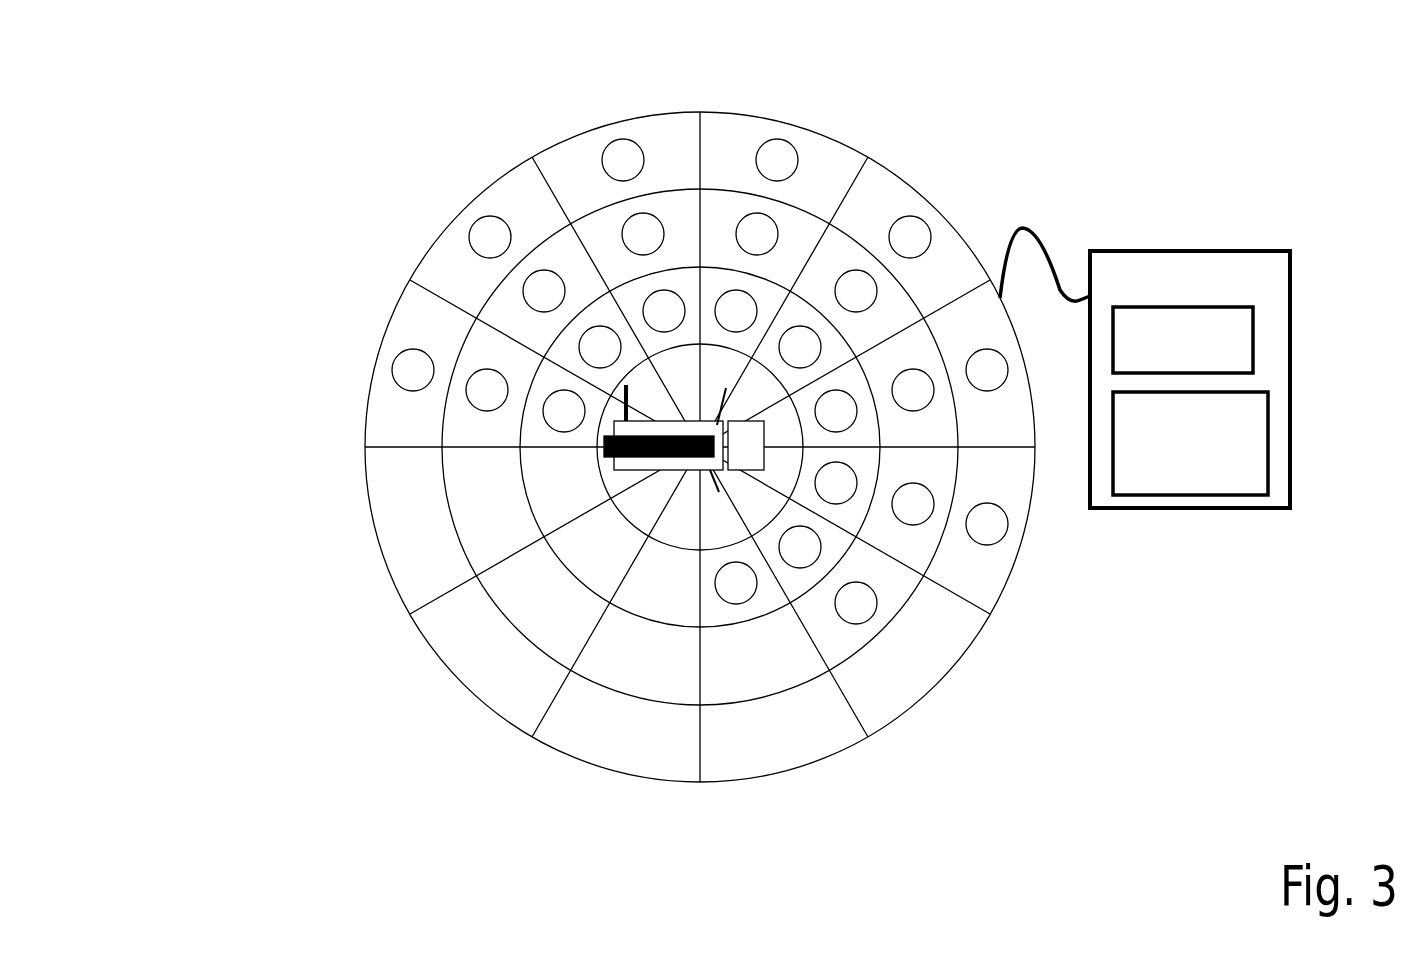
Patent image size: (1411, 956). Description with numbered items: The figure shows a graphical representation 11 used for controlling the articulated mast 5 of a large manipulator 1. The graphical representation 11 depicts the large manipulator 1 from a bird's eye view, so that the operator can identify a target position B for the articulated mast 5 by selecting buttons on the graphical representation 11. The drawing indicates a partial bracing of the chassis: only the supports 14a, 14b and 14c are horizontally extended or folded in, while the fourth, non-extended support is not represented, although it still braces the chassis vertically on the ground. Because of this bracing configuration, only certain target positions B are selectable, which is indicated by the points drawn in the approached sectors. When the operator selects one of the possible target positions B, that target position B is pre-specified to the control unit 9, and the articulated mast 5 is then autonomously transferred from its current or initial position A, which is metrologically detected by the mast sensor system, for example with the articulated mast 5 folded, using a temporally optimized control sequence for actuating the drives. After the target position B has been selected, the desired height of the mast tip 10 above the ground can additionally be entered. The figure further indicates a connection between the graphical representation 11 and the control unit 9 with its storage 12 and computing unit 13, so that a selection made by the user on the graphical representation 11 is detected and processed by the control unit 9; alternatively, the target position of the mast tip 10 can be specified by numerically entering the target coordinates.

The large manipulator 1 is at (688, 418).
The articulated mast 5 is at (662, 433).
The control unit 9 is at (1244, 282).
The mast tip 10 is at (717, 431).
The graphical representation 11 is at (92, 103).
The storage 12 is at (1149, 428).
The computing unit 13 is at (1198, 340).
The support 14a is at (626, 385).
The support 14b is at (727, 387).
The support 14c is at (719, 493).
The initial position A is at (712, 455).
The target position B is at (415, 367).